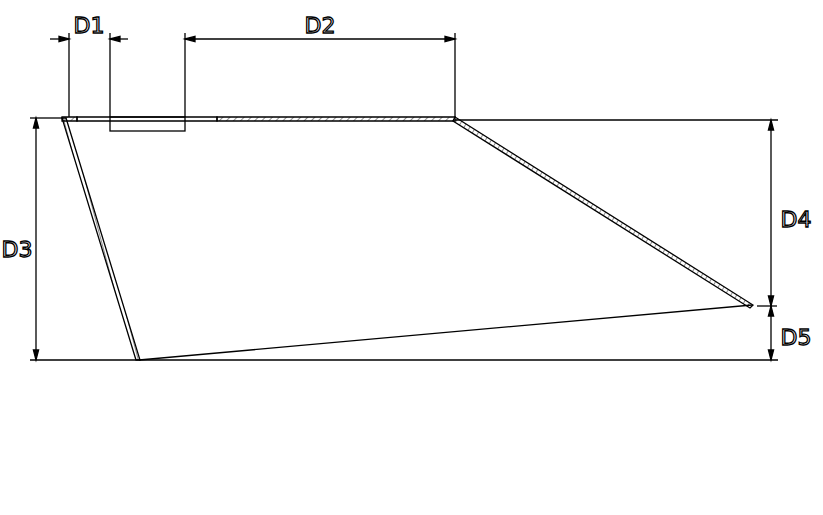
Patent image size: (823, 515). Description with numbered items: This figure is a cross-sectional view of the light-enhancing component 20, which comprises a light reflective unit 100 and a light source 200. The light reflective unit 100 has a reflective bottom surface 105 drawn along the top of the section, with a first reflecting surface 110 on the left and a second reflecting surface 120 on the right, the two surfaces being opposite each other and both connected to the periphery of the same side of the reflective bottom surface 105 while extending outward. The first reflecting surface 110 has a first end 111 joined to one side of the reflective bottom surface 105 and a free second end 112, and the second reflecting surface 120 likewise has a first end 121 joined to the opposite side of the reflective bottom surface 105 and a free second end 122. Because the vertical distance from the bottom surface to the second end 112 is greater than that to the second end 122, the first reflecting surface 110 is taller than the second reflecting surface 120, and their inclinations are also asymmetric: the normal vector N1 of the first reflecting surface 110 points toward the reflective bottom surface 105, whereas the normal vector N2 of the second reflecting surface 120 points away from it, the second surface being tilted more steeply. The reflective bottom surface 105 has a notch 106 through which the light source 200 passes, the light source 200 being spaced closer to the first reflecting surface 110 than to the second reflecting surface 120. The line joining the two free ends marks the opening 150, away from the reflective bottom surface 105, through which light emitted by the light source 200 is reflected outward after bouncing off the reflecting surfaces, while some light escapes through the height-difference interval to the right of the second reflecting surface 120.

The light-enhancing component 20 is at (556, 39).
The light reflective unit 100 is at (395, 245).
The reflective bottom surface 105 is at (311, 125).
The notch 106 is at (202, 112).
The first reflecting surface 110 is at (113, 267).
The first end of the first reflecting surface 111 is at (66, 120).
The second end of the first reflecting surface 112 is at (142, 361).
The second reflecting surface 120 is at (618, 235).
The first end of the second reflecting surface 121 is at (456, 121).
The second end of the second reflecting surface 122 is at (749, 310).
The opening 150 is at (452, 338).
The light source 200 is at (143, 121).
The normal vector of the first reflecting surface N1 is at (142, 358).
The normal vector of the second reflecting surface N2 is at (555, 187).